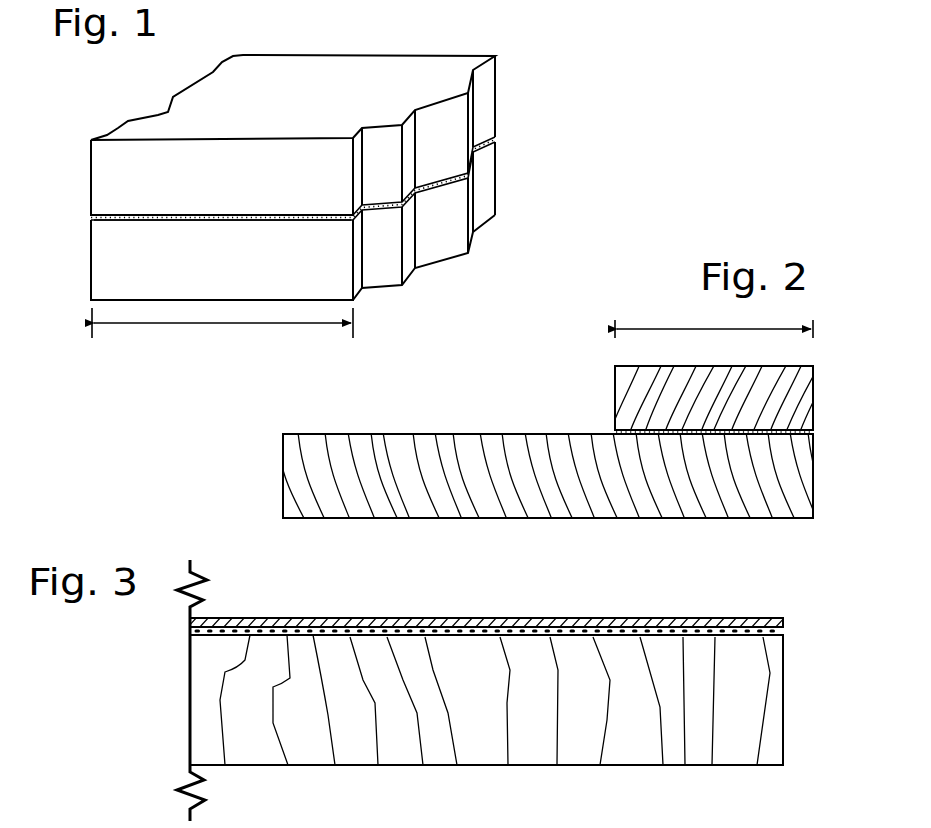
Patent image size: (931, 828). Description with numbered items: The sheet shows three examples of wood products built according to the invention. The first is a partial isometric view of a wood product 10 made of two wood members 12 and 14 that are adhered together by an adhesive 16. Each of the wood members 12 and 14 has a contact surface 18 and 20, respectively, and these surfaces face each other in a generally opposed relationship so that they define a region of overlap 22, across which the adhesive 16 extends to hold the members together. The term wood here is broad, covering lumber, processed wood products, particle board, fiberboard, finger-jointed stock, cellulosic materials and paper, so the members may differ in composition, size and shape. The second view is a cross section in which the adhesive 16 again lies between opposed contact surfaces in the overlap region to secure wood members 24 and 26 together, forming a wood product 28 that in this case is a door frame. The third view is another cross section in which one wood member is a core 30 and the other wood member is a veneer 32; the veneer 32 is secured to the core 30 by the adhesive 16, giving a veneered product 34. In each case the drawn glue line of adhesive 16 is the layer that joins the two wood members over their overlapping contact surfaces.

In FIG. 1, the wood product 10 is at (315, 36).
In FIG. 1, the wood member 12 is at (360, 55).
In FIG. 1, the wood member 14 is at (497, 172).
In FIG. 1, the adhesive 16 is at (496, 138).
In FIG. 2, the adhesive 16 is at (613, 432).
In FIG. 3, the adhesive 16 is at (784, 630).
In FIG. 1, the contact surface 18 is at (214, 212).
In FIG. 1, the contact surface 20 is at (270, 220).
In FIG. 1, the region of overlap 22 is at (186, 324).
In FIG. 2, the region of overlap 22 is at (683, 327).
In FIG. 2, the wood member 24 is at (723, 366).
In FIG. 2, the wood member 26 is at (393, 434).
In FIG. 2, the wood product 28 is at (570, 380).
In FIG. 3, the core 30 is at (486, 701).
In FIG. 3, the veneer 32 is at (413, 618).
In FIG. 3, the veneered product 34 is at (701, 586).